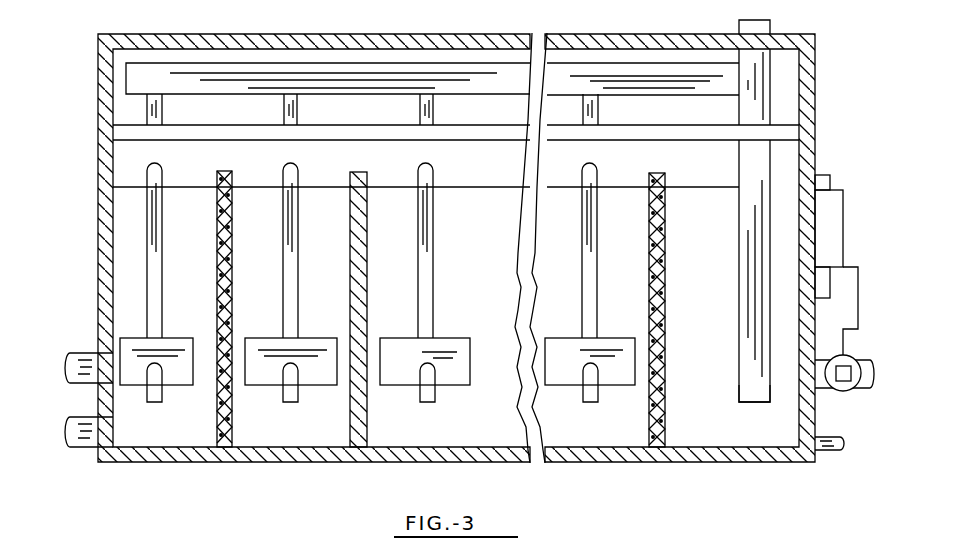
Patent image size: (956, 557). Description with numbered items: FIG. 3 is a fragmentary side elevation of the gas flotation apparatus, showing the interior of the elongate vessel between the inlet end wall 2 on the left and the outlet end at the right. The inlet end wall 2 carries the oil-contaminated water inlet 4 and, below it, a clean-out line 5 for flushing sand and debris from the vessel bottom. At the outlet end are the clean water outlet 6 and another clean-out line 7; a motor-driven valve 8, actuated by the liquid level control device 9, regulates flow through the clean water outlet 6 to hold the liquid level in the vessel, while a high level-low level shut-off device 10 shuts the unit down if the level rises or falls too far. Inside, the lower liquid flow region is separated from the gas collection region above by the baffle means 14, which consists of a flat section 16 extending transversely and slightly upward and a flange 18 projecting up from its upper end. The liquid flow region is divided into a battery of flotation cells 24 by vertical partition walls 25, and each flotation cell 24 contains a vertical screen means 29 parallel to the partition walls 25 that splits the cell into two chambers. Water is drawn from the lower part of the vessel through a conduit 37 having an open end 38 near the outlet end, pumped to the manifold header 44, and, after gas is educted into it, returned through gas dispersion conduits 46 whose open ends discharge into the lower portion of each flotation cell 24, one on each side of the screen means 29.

The inlet end wall 2 is at (436, 248).
The oil-contaminated water inlet 4 is at (87, 349).
The clean-out line 5 is at (89, 457).
The clean water outlet 6 is at (855, 398).
The clean-out line 7 is at (846, 459).
The motor-driven valve 8 is at (860, 356).
The liquid level control device 9 is at (848, 278).
The high level-low level shut-off device 10 is at (851, 169).
The baffle means 14 is at (426, 202).
The flat section 16 is at (214, 166).
The flange 18 is at (456, 162).
The flotation cell 24 is at (604, 438).
The partition wall 25 is at (384, 309).
The screen means 29 is at (443, 309).
The conduit 37 is at (737, 376).
The open end 38 is at (763, 231).
The manifold header 44 is at (432, 52).
The gas dispersion conduit 46 is at (372, 250).